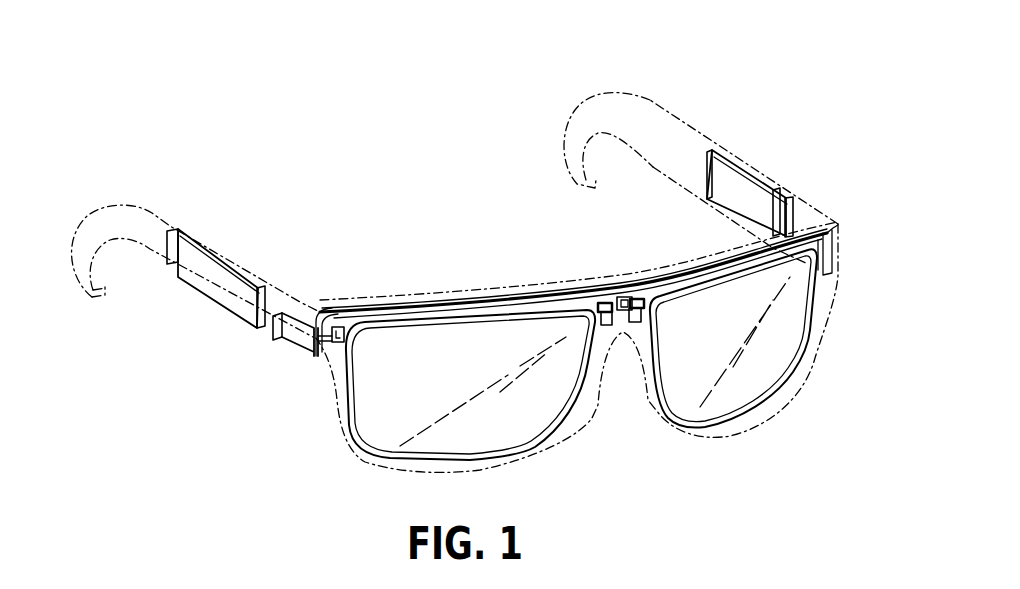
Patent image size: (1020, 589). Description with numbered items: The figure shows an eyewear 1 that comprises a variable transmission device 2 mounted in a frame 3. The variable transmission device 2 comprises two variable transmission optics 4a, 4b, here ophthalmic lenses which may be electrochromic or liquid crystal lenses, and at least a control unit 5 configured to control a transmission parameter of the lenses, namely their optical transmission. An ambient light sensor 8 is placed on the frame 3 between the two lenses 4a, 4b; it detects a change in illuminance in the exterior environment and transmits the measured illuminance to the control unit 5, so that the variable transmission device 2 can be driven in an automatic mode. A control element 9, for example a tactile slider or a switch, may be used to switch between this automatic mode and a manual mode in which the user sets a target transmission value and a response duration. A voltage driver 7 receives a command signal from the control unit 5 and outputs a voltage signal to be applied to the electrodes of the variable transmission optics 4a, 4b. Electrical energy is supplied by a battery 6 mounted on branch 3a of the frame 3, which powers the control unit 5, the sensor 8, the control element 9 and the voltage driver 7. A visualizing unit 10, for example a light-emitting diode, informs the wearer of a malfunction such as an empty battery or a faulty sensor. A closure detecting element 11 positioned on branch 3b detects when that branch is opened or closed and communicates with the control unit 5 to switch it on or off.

The eyewear 1 is at (750, 74).
The variable transmission device 2 is at (634, 426).
The frame 3 is at (687, 158).
The branch 3a is at (598, 115).
The branch 3b is at (155, 250).
The variable transmission optic 4a is at (536, 402).
The variable transmission optic 4b is at (760, 347).
The control unit 5 is at (605, 306).
The battery 6 is at (752, 203).
The voltage driver 7 is at (210, 248).
The ambient light sensor 8 is at (626, 297).
The control element 9 is at (240, 298).
The visualizing unit 10 is at (337, 341).
The closure detecting element 11 is at (291, 338).